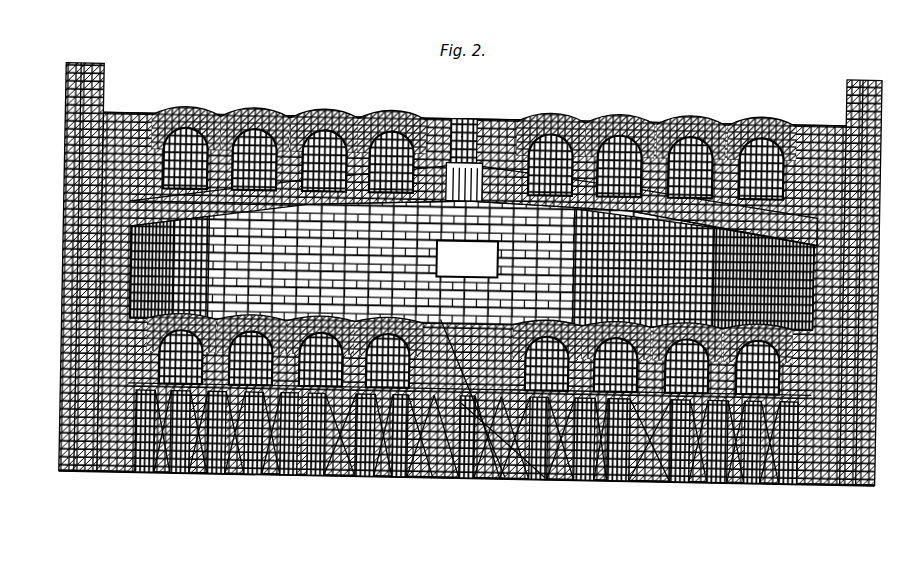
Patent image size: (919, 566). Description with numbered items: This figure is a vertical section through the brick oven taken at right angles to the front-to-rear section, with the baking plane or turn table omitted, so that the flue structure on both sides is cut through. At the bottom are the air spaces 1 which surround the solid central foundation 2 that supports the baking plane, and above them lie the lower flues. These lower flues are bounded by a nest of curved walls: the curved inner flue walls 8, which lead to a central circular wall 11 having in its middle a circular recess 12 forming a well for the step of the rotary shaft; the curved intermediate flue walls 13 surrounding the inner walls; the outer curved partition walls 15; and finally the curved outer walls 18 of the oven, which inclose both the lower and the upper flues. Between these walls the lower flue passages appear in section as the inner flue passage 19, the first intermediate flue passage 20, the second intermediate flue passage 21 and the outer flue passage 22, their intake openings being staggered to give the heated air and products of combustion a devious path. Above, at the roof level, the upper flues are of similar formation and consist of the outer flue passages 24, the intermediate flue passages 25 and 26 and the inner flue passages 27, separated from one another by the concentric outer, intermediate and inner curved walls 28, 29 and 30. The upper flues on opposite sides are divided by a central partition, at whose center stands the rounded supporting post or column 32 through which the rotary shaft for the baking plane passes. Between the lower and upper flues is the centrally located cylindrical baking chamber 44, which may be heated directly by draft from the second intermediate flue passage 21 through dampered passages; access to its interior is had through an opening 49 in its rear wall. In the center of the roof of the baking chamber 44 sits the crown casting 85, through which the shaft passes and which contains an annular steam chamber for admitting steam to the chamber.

The air spaces 1 is at (163, 470).
The solid central foundation 2 is at (493, 469).
The curved inner flue walls 8 is at (426, 470).
The central circular wall 11 is at (471, 470).
The circular recess 12 is at (540, 469).
The curved intermediate flue walls 13 is at (358, 472).
The outer curved partition walls 15 is at (270, 470).
The curved outer walls 18 is at (56, 205).
The inner flue passage 19 is at (448, 470).
The first intermediate flue passage 20 is at (395, 471).
The second intermediate flue passage 21 is at (325, 475).
The outer flue passage 22 is at (245, 471).
The outer flue passages 24 is at (157, 113).
The intermediate flue passages 25 is at (225, 114).
The intermediate flue passages 26 is at (297, 108).
The inner flue passages 27 is at (365, 114).
The outer curved wall 28 is at (214, 129).
The intermediate curved wall 29 is at (285, 128).
The inner curved wall 30 is at (350, 127).
The supporting post or column 32 is at (466, 122).
The baking chamber 44 is at (513, 469).
The opening 49 is at (467, 258).
The crown casting 85 is at (430, 116).